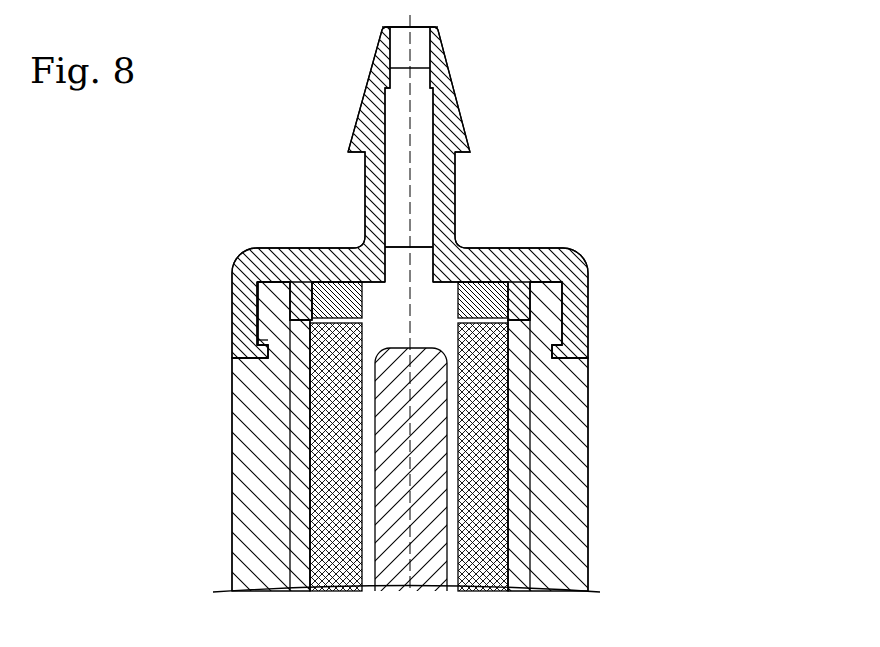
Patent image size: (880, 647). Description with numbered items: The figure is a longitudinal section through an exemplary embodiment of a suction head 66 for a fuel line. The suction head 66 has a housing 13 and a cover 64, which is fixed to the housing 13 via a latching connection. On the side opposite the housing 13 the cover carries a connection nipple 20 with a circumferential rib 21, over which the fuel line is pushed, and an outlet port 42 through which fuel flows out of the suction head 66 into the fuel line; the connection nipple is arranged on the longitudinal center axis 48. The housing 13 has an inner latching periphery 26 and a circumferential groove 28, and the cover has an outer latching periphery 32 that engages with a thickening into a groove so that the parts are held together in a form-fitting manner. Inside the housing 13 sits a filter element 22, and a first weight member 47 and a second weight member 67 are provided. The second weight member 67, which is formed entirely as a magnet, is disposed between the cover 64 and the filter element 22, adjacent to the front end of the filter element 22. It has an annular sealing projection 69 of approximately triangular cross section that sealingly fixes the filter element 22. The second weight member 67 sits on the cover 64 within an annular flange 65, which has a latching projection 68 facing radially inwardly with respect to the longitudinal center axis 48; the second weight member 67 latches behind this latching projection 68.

The housing 13 is at (573, 452).
The connection nipple 20 is at (372, 205).
The circumferential rib 21 is at (355, 138).
The filter element 22 is at (310, 517).
The inner latching periphery 26 is at (262, 312).
The circumferential groove 28 is at (236, 362).
The outer latching periphery 32 is at (250, 340).
The outlet port 42 is at (430, 28).
The first weight member 47 is at (440, 556).
The longitudinal center axis 48 is at (412, 148).
The cover 64 is at (488, 272).
The annular flange 65 is at (530, 312).
The suction head 66 is at (658, 137).
The second weight member 67 is at (326, 262).
The latching projection 68 is at (514, 315).
The annular sealing projection 69 is at (566, 358).